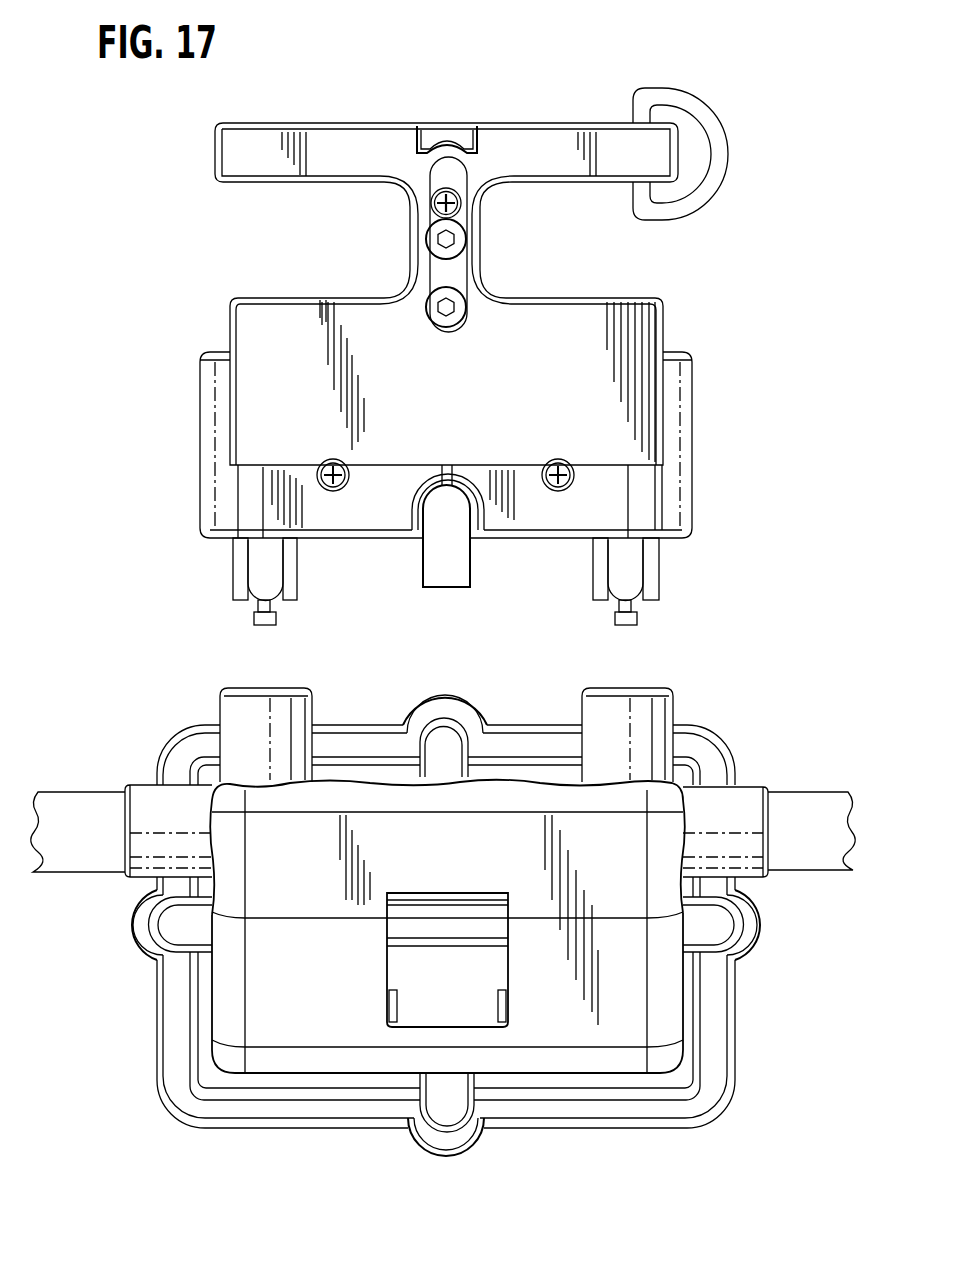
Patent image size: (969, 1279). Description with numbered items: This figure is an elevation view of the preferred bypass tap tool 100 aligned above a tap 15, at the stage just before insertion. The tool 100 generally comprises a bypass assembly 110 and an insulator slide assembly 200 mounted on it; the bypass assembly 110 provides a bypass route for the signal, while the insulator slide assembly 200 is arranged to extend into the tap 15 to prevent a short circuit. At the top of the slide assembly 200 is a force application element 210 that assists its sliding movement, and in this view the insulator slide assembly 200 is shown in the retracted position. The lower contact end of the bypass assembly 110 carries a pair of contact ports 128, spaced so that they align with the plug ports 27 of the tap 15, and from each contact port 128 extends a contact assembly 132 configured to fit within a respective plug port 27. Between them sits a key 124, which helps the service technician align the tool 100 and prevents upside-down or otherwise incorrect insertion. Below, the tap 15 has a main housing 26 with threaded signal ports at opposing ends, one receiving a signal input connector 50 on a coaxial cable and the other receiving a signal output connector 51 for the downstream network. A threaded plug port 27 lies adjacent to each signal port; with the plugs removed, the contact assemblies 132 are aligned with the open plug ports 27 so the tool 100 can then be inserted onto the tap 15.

The tap 15 is at (757, 955).
The main housing 26 is at (270, 1005).
The plug port 27 is at (220, 712).
The signal input connector 50 is at (92, 858).
The signal output connector 51 is at (820, 857).
The bypass tap tool 100 is at (678, 315).
The bypass assembly 110 is at (196, 450).
The key 124 is at (447, 553).
The contact port 128 is at (302, 548).
The contact assembly 132 is at (232, 580).
The insulator slide assembly 200 is at (218, 290).
The force application element 210 is at (446, 132).